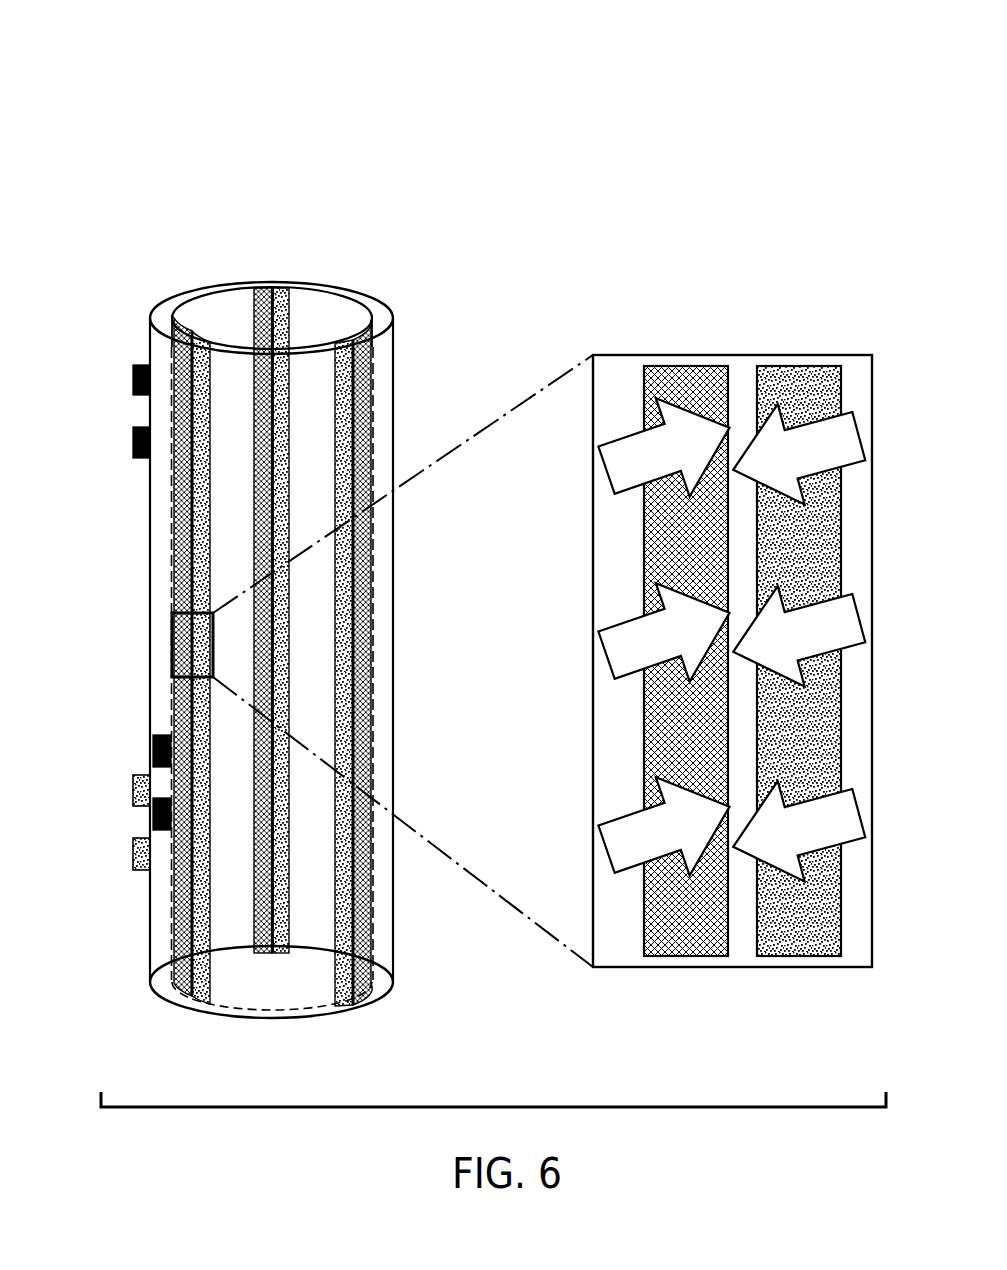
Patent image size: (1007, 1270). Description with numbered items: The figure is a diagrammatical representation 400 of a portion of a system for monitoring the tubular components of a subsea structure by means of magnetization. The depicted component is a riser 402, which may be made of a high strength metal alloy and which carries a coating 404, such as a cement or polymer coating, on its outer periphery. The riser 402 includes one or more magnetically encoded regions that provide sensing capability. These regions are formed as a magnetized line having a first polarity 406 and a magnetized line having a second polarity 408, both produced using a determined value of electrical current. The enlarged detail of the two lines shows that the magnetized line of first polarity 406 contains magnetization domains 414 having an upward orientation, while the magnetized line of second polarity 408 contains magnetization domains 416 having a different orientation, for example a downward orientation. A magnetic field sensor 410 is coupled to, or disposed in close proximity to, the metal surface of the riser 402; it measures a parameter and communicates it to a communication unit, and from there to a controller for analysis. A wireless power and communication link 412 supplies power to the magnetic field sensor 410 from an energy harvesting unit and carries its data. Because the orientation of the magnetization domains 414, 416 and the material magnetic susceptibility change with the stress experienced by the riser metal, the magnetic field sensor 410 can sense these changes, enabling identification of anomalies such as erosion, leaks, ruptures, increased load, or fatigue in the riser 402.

The diagrammatical representation 400 is at (770, 64).
The riser 402 is at (333, 303).
The coating 404 is at (393, 375).
The magnetized line having a first polarity 406 is at (348, 688).
The magnetized line having a second polarity 408 is at (360, 636).
The magnetic field sensor 410 is at (133, 380).
The wireless power and communication link 412 is at (133, 793).
The magnetization domains 414 is at (612, 472).
The magnetization domains 416 is at (856, 446).